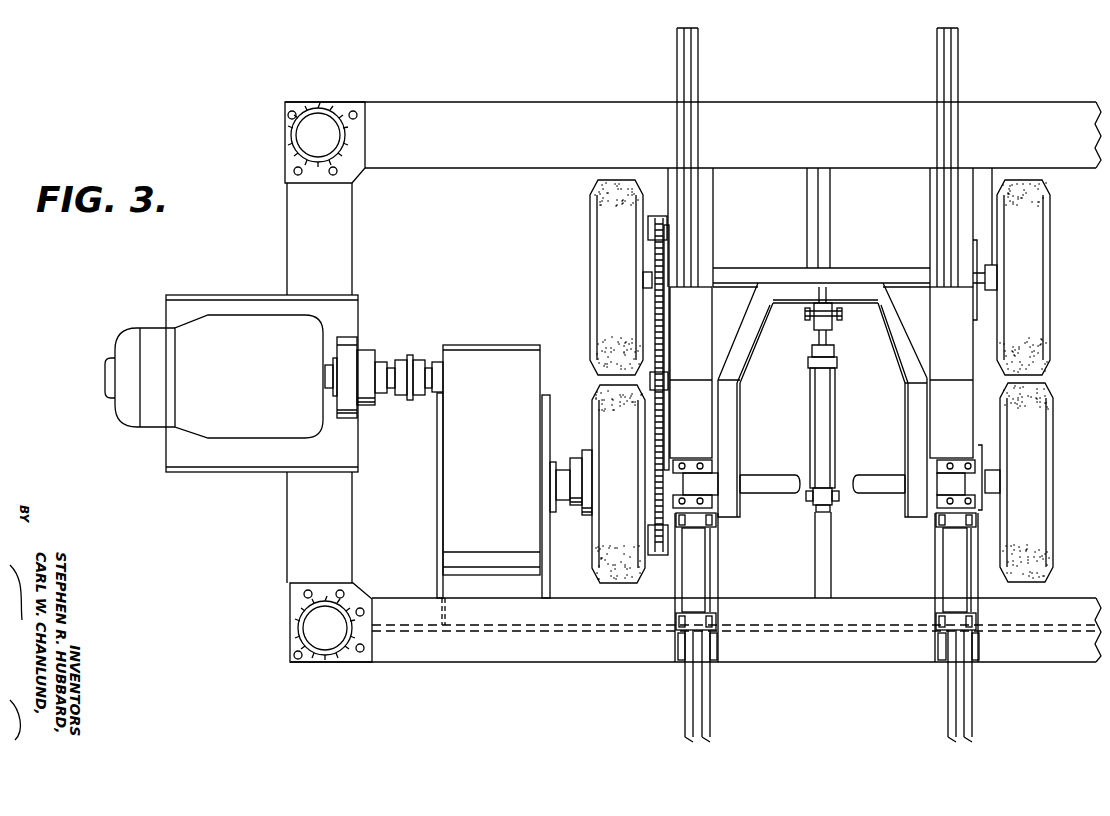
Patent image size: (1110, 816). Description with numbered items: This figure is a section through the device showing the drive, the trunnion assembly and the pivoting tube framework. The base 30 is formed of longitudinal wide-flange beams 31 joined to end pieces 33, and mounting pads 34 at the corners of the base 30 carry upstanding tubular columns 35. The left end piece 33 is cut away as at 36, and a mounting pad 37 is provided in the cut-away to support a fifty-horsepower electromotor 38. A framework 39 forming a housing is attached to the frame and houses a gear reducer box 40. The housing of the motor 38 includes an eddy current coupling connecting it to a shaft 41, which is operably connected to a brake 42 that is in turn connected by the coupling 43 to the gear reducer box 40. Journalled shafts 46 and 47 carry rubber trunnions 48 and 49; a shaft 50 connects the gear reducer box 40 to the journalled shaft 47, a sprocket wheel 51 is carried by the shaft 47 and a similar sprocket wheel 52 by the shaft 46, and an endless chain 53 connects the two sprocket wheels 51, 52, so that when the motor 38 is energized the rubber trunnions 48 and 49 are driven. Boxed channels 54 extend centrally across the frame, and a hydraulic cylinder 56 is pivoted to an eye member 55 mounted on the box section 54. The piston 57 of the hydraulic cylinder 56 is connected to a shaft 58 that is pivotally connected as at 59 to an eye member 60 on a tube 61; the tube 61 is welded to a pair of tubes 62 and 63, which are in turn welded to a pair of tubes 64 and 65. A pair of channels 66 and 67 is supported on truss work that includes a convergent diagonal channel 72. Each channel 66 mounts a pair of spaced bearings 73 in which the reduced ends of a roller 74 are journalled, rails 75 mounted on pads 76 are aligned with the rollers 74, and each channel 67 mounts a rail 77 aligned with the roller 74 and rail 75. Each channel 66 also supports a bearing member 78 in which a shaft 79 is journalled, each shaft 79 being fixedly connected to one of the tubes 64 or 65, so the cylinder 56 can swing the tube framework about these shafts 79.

The base 30 is at (666, 386).
The longitudinal wide-flange beams 31 is at (522, 122).
The end pieces 33 is at (300, 554).
The mounting pads 34 is at (292, 170).
The tubular columns 35 is at (291, 136).
The cut-away portion 36 is at (314, 300).
The mounting pad 37 is at (202, 470).
The electromotor 38 is at (249, 420).
The framework 39 is at (440, 540).
The gear reducer box 40 is at (456, 462).
The shaft 41 is at (327, 378).
The brake 42 is at (364, 352).
The coupling 43 is at (410, 394).
The shaft 46 is at (882, 268).
The shaft 47 is at (775, 480).
The rubber trunnion 48 is at (604, 262).
The rubber trunnion 49 is at (601, 393).
The shaft 50 is at (563, 486).
The sprocket wheel 51 is at (652, 541).
The sprocket wheel 52 is at (650, 221).
The endless chain 53 is at (663, 345).
The boxed channels 54 is at (833, 540).
The eye member 55 is at (824, 506).
The hydraulic cylinder 56 is at (820, 388).
The piston 57 is at (837, 361).
The shaft 58 is at (818, 350).
The pivotal connection 59 is at (834, 318).
The eye member 60 is at (816, 320).
The tube 61 is at (783, 296).
The tube 62 is at (752, 362).
The tube 63 is at (892, 330).
The tube 64 is at (730, 413).
The tube 65 is at (914, 433).
The channel 66 is at (712, 582).
The channel 67 is at (708, 202).
The convergent diagonal channel 72 is at (977, 333).
The spaced bearings 73 is at (714, 522).
The roller 74 is at (692, 558).
The rails 75 is at (702, 695).
The pads 76 is at (714, 645).
The rail 77 is at (700, 56).
The bearing member 78 is at (698, 460).
The shaft 79 is at (718, 480).